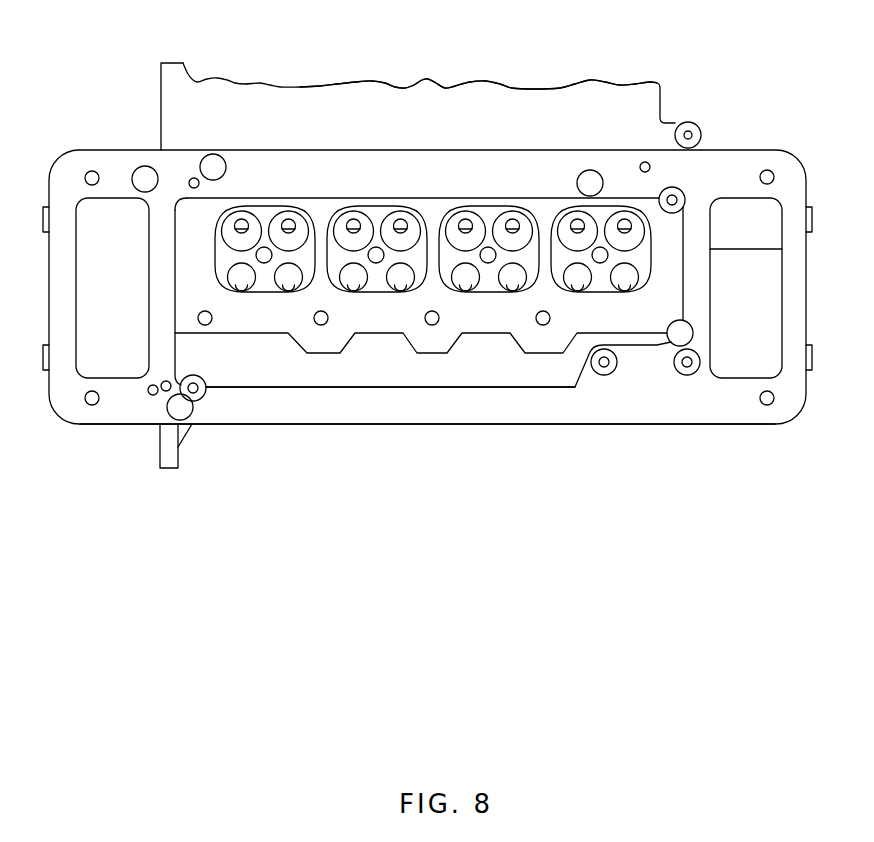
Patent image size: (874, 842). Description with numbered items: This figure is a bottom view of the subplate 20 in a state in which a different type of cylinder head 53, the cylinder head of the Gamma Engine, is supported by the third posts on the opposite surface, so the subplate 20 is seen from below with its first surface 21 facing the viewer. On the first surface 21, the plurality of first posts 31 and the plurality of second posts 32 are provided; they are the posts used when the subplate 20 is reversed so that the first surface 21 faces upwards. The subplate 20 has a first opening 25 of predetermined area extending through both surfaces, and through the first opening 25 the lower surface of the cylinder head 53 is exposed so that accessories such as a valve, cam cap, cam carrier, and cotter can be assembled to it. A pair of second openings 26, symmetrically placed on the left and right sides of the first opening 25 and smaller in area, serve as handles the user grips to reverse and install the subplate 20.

The subplate 20 is at (742, 160).
The first surface 21 is at (299, 414).
The first opening 25 is at (422, 384).
The second openings 26 is at (115, 312).
The first posts 31 is at (213, 160).
The second posts 32 is at (145, 173).
The cylinder head 53 is at (592, 84).